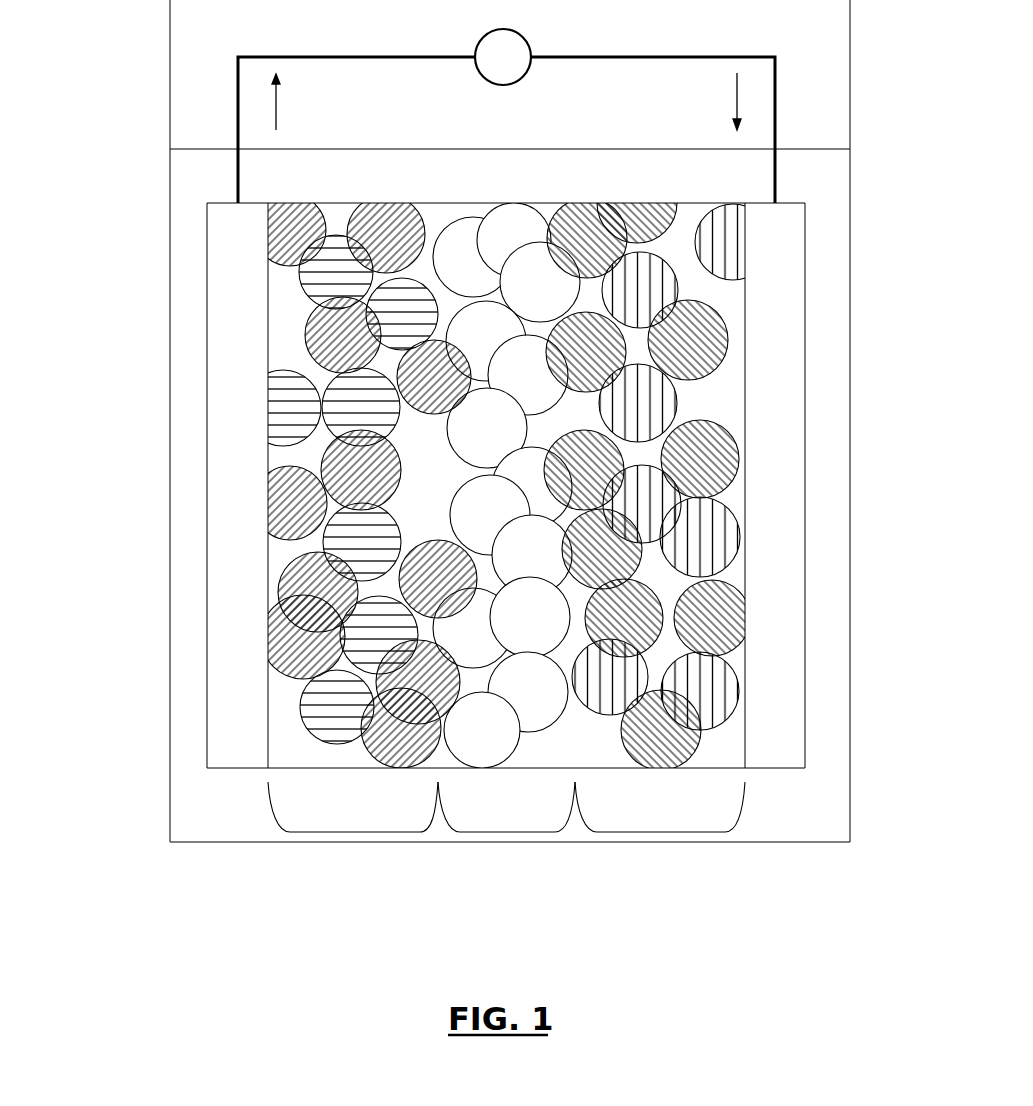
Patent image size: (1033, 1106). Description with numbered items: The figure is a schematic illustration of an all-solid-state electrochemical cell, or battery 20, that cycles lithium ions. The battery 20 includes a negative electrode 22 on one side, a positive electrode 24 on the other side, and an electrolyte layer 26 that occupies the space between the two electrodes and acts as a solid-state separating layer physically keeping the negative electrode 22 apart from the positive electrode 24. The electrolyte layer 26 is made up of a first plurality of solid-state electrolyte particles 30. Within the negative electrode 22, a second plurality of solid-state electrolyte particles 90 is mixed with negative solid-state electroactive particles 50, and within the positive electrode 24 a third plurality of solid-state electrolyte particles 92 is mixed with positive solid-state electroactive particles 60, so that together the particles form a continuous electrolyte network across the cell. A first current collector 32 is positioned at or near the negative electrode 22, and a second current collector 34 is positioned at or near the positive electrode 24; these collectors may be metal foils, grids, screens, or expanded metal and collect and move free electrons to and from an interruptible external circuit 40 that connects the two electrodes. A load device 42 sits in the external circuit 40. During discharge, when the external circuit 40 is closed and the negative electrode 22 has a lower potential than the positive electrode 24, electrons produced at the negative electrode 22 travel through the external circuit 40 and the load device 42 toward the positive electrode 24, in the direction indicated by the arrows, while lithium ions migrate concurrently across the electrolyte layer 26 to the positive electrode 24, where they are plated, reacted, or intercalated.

The solid-state electrochemical cell 20 is at (150, 185).
The negative electrode 22 is at (353, 832).
The positive electrode 24 is at (661, 832).
The electrolyte layer 26 is at (508, 832).
The first plurality of solid-state electrolyte particles 30 is at (505, 228).
The first current collector 32 is at (207, 712).
The second current collector 34 is at (805, 712).
The external circuit 40 is at (150, 54).
The load device 42 is at (503, 57).
The negative solid-state electroactive particles 50 is at (287, 226).
The positive solid-state electroactive particles 60 is at (718, 617).
The second plurality of solid-state electrolyte particles 90 is at (288, 410).
The third plurality of solid-state electrolyte particles 92 is at (718, 243).